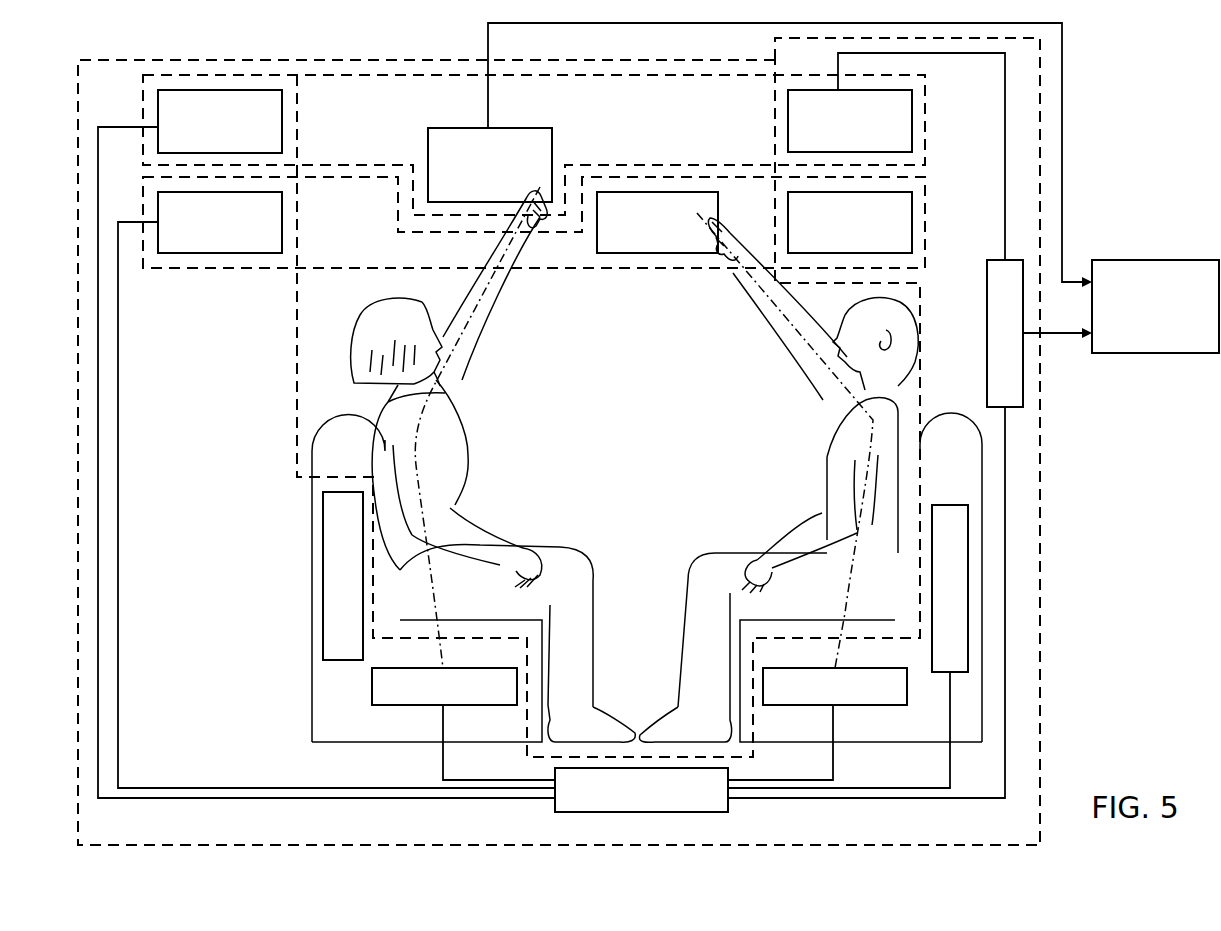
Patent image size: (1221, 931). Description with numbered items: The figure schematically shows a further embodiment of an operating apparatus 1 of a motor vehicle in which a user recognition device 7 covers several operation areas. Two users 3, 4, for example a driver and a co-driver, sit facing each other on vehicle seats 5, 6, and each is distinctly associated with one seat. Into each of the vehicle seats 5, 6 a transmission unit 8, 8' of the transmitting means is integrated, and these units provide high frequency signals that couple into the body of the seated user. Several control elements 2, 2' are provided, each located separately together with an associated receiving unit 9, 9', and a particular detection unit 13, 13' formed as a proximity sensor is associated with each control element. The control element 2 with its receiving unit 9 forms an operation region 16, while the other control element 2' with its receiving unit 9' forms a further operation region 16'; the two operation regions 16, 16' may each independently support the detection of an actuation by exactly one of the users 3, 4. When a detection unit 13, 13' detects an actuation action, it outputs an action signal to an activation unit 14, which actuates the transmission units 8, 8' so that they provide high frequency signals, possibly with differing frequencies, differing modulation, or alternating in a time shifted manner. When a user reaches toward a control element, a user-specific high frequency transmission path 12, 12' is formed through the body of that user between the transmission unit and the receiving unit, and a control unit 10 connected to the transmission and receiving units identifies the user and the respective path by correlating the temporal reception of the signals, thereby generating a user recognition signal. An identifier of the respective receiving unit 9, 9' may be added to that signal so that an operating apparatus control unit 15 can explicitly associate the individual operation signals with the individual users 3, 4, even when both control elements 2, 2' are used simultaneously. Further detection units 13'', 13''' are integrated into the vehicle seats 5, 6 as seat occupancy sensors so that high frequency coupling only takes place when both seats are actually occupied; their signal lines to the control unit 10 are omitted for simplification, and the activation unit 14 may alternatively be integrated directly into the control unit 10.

The operating apparatus 1 is at (1145, 643).
The control element 2 is at (739, 155).
The control element 2' is at (680, 222).
The user 3 is at (460, 500).
The user 4 is at (826, 494).
The vehicle seat 5 is at (343, 415).
The vehicle seat 6 is at (944, 413).
The user recognition device 7 is at (1048, 457).
The transmission unit 8 is at (831, 724).
The transmission unit 8' is at (446, 724).
The receiving unit 9 is at (324, 443).
The receiving unit 9' is at (336, 490).
The control unit 10 is at (987, 300).
The high frequency transmission path 12 is at (785, 440).
The high frequency transmission path 12' is at (477, 427).
The detection unit 13 is at (896, 156).
The detection unit 13' is at (888, 222).
The detection unit 13'' is at (851, 619).
The detection unit 13''' is at (302, 576).
The activation unit 14 is at (705, 812).
The operating apparatus control unit 15 is at (1160, 260).
The operation region 16 is at (534, 145).
The operation region 16' is at (534, 222).